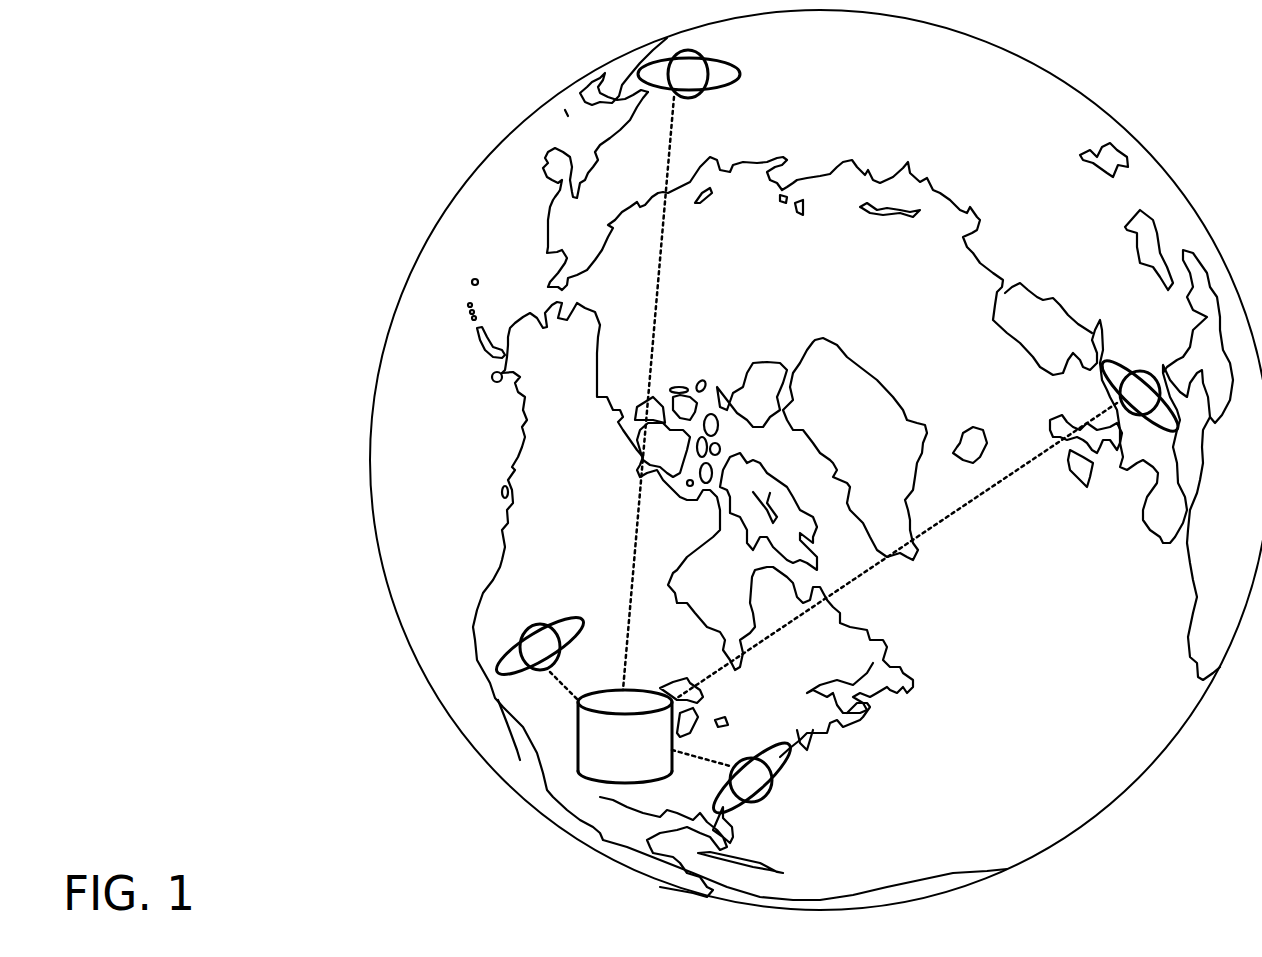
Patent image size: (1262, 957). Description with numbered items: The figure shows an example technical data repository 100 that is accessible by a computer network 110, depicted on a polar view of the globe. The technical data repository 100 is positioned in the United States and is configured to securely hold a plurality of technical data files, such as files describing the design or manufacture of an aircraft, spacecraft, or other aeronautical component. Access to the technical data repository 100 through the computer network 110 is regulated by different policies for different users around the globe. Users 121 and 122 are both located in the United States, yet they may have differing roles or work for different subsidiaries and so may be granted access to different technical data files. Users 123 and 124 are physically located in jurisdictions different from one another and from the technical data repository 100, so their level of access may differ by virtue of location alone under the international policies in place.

The technical data repository 100 is at (643, 755).
The computer network 110 is at (612, 540).
The user 121 is at (768, 797).
The user 122 is at (533, 622).
The user 123 is at (1148, 368).
The user 124 is at (740, 73).